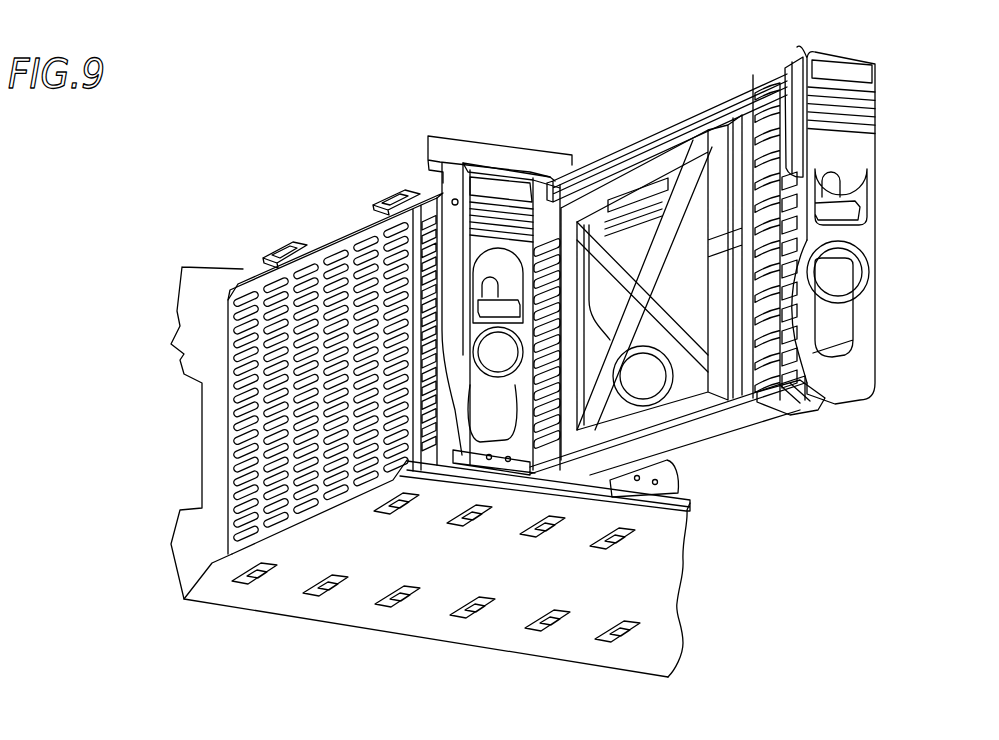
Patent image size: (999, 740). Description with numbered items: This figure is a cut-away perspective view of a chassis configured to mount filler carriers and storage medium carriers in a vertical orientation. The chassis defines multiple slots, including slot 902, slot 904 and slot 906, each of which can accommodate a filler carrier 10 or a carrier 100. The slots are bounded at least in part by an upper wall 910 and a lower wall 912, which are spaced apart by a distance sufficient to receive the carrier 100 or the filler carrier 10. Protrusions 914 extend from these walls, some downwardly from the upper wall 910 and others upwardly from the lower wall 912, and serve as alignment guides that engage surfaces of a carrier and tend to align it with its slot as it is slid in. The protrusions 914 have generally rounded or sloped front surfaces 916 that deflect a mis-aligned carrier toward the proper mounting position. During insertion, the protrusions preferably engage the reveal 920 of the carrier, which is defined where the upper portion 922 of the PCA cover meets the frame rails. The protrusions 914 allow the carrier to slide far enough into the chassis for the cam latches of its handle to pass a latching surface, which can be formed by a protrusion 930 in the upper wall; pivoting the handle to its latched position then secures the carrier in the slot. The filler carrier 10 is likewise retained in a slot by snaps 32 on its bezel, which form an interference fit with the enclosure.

The filler carrier 10 is at (900, 178).
The snap 32 is at (800, 47).
The carrier 100 is at (222, 355).
The slot 902 is at (507, 163).
The slot 904 is at (553, 200).
The slot 906 is at (655, 176).
The upper wall 910 is at (268, 224).
The lower wall 912 is at (658, 538).
The protrusions 914 is at (380, 204).
The front surfaces 916 is at (408, 187).
The reveal 920 is at (262, 268).
The upper portion 922 is at (325, 237).
The protrusion 930 is at (452, 160).